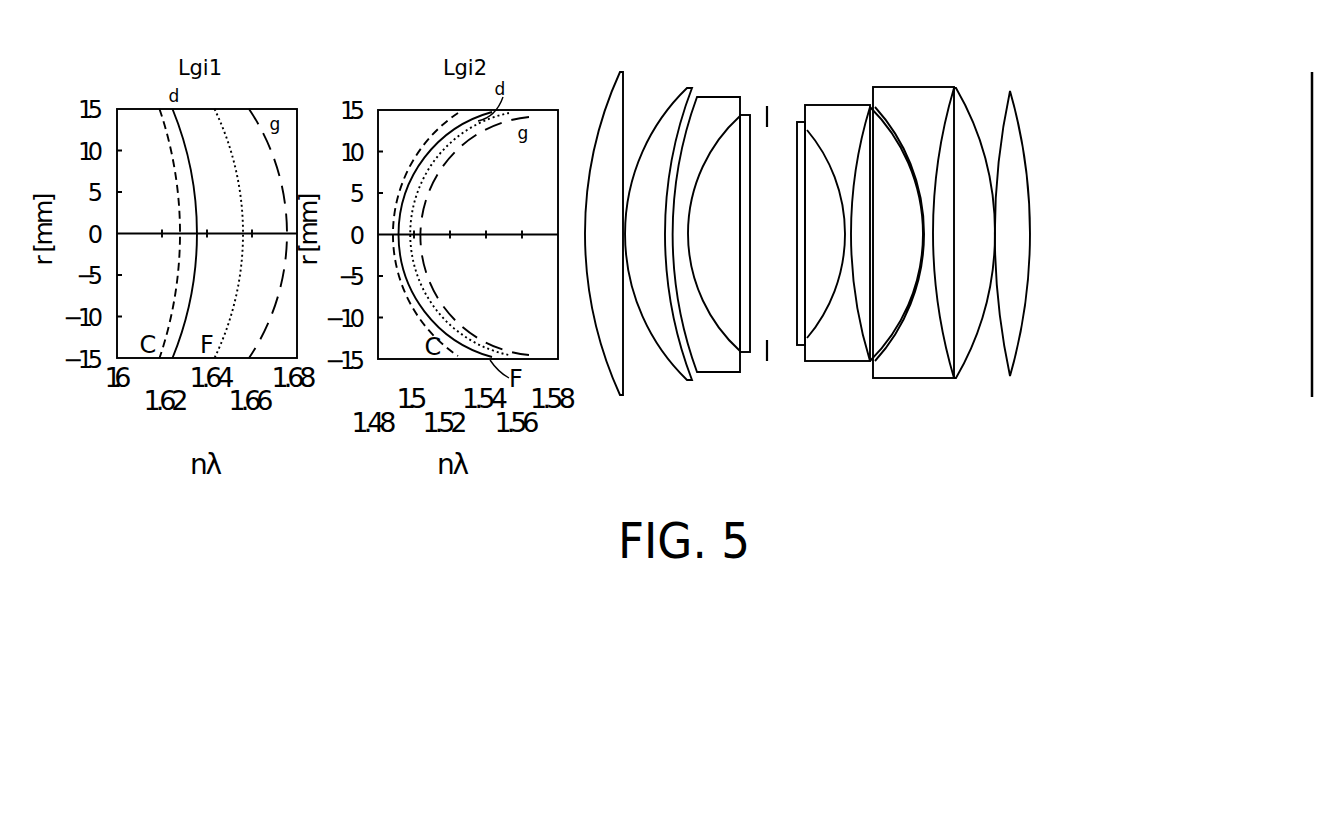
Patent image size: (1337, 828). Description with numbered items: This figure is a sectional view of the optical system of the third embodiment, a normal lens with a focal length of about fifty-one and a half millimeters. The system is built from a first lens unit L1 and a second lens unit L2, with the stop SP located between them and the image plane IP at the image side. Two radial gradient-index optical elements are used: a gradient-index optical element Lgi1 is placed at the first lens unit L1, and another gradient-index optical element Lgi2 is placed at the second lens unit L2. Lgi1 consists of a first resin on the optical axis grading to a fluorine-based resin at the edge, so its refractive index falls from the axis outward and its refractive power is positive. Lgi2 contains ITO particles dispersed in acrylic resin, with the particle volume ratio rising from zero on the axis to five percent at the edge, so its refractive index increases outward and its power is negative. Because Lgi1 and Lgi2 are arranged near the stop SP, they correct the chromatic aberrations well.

The gradient-index optical element Lgi1 is at (745, 115).
The gradient-index optical element Lgi2 is at (798, 120).
The stop SP is at (774, 217).
The image plane IP is at (1306, 216).
The first lens unit L1 is at (673, 238).
The second lens unit L2 is at (909, 239).